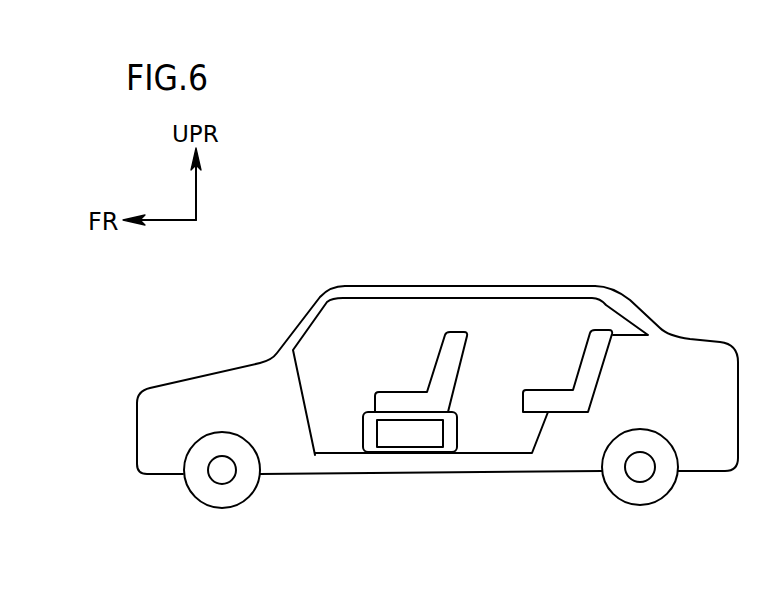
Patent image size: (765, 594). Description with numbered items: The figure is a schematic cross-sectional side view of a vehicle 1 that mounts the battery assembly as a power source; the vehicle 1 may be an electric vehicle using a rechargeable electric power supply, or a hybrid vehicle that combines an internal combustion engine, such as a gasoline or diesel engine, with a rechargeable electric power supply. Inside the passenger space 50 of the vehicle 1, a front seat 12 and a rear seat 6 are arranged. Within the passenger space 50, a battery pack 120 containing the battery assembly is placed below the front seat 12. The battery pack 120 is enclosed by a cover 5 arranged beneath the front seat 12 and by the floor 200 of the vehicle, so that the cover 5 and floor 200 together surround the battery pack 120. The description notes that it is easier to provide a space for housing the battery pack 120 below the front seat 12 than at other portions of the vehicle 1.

The vehicle 1 is at (217, 308).
The passenger space 50 is at (508, 327).
The front seat 12 is at (408, 402).
The rear seat 6 is at (550, 388).
The cover 5 is at (457, 437).
The battery pack 120 is at (411, 433).
The floor 200 is at (342, 447).